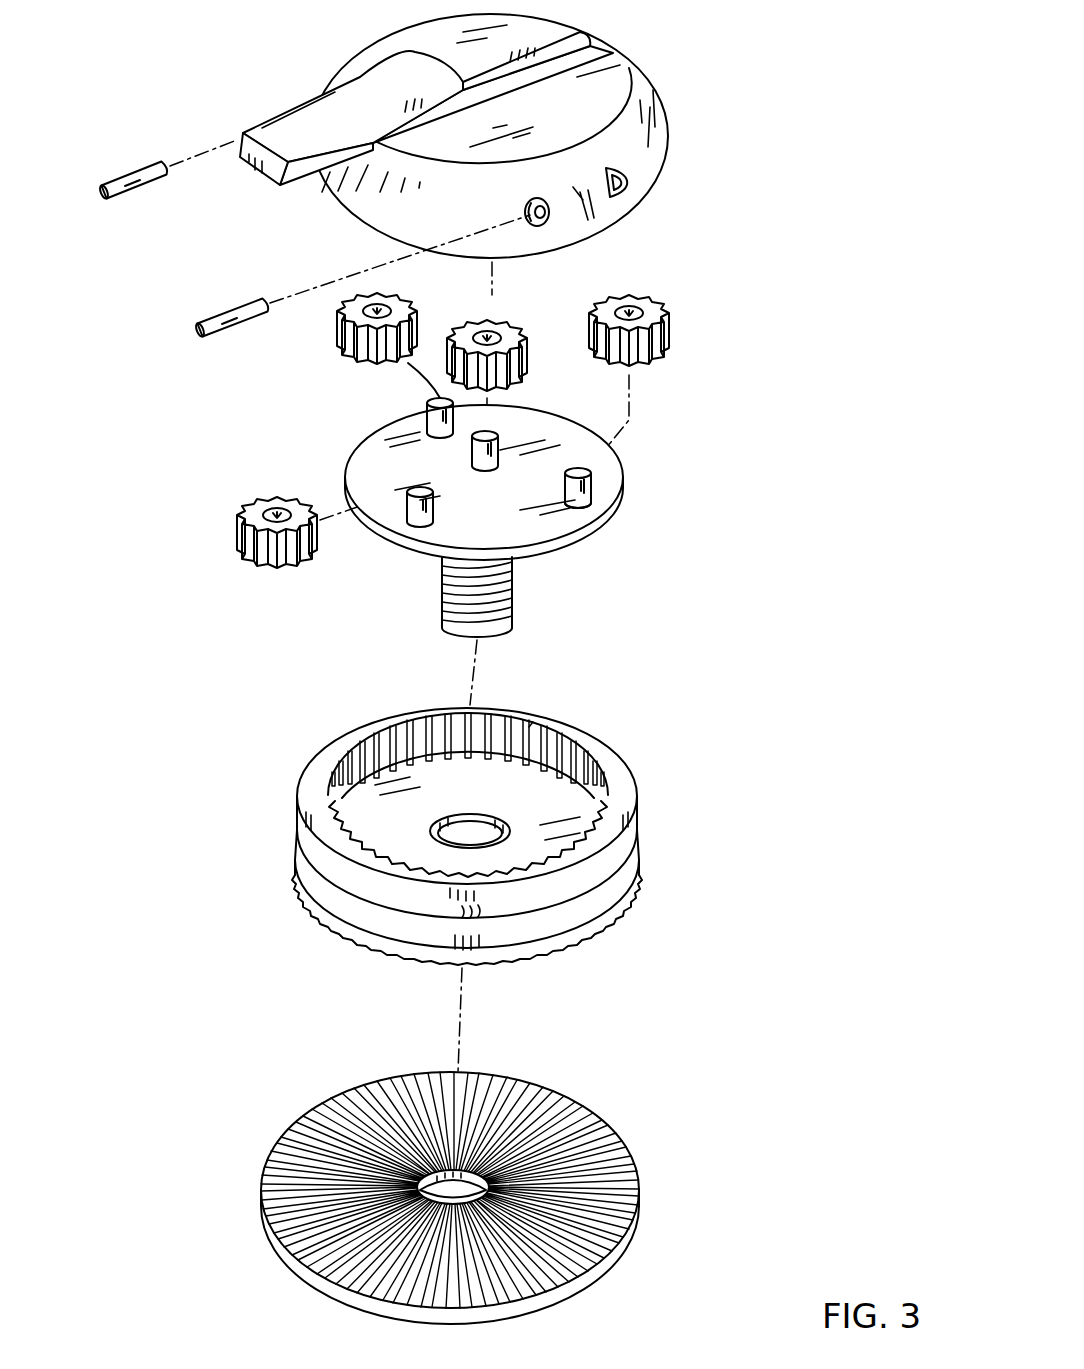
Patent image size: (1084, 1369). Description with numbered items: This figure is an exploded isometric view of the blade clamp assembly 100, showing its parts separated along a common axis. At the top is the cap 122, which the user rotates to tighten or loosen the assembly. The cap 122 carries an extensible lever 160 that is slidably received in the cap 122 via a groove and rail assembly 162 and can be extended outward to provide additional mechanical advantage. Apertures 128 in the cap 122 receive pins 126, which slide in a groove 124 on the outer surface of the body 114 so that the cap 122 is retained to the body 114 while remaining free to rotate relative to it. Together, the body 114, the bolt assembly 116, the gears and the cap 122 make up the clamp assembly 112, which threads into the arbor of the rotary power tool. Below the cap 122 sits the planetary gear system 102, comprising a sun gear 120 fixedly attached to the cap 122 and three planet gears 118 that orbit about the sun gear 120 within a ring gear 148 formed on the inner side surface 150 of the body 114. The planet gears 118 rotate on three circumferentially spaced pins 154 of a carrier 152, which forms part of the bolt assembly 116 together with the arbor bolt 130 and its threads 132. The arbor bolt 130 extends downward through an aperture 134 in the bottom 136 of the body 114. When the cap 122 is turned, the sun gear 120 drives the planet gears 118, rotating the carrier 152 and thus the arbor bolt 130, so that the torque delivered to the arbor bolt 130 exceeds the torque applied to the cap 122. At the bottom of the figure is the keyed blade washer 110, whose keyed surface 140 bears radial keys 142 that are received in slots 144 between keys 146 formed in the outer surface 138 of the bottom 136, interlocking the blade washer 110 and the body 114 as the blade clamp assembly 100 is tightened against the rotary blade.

The blade clamp assembly 100 is at (717, 87).
The planetary gear system 102 is at (175, 449).
The keyed blade washer 110 is at (497, 1166).
The clamp assembly 112 is at (727, 273).
The body 114 is at (490, 827).
The bolt assembly 116 is at (546, 485).
The planet gears 118 is at (337, 343).
The sun gear 120 is at (533, 342).
The cap 122 is at (667, 143).
The groove 124 is at (645, 828).
The pins 126 is at (124, 176).
The apertures 128 is at (535, 226).
The arbor bolt 130 is at (546, 597).
The threads 132 is at (517, 590).
The aperture 134 is at (543, 798).
The bottom 136 is at (600, 768).
The outer surface 138 is at (365, 940).
The keyed surface 140 is at (560, 1123).
The keys 142 is at (483, 1083).
The slots 144 is at (577, 948).
The keys 146 is at (513, 964).
The ring gear 148 is at (533, 722).
The inner side surface 150 is at (497, 713).
The carrier 152 is at (610, 463).
The pins 154 is at (593, 497).
The extensible lever 160 is at (300, 105).
The groove and rail assembly 162 is at (300, 178).